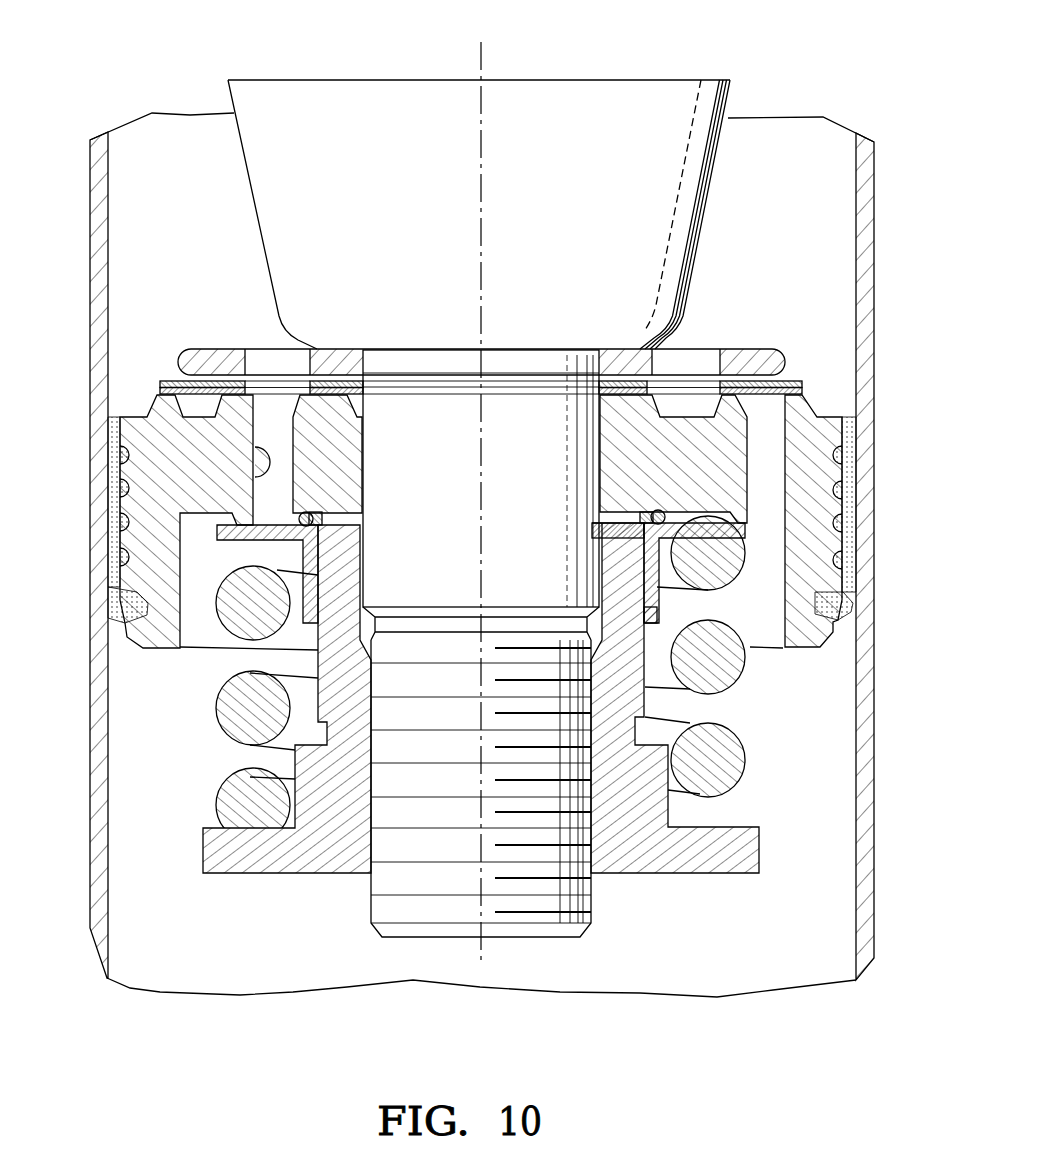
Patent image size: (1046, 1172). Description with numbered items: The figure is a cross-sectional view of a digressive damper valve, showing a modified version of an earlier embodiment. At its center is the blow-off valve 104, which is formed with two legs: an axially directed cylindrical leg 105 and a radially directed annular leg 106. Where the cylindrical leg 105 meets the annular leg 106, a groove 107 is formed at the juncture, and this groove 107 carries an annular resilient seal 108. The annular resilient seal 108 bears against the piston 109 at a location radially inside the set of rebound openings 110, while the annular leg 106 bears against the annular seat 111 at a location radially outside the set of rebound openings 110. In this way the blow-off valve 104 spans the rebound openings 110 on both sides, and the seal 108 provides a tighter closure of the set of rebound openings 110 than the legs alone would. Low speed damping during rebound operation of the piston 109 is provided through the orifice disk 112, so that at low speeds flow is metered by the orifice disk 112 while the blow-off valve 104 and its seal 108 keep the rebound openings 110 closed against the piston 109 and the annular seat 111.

The blow-off valve 104 is at (657, 593).
The cylindrical leg 105 is at (655, 607).
The annular leg 106 is at (693, 534).
The groove 107 is at (638, 515).
The annular resilient seal 108 is at (652, 511).
The piston 109 is at (817, 413).
The set of rebound openings 110 is at (262, 476).
The annular seat 111 is at (745, 528).
The orifice disk 112 is at (803, 388).